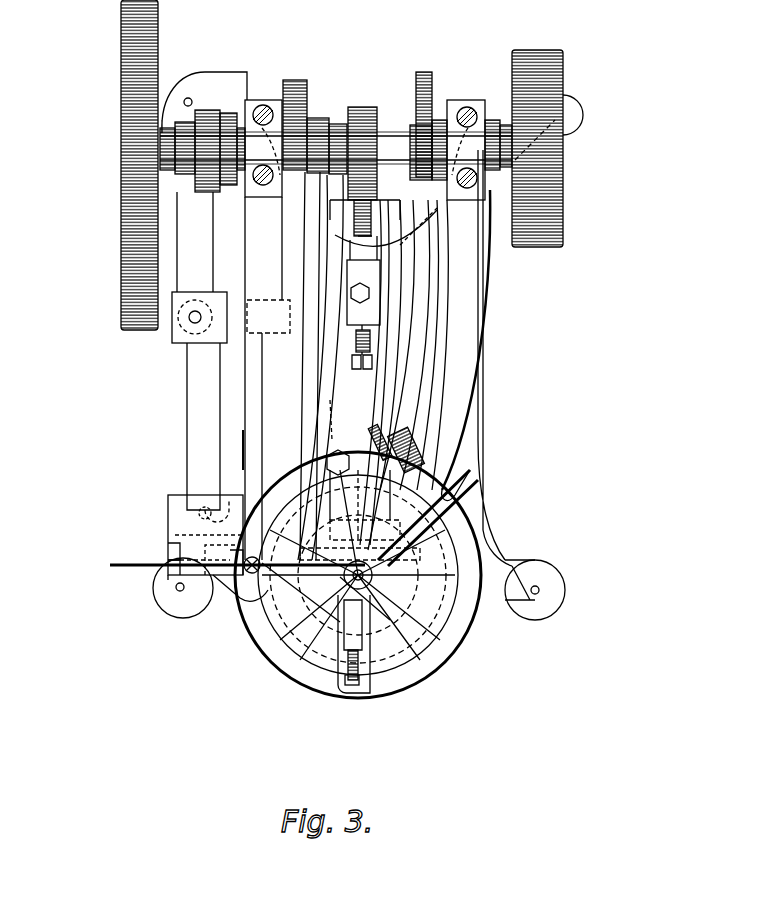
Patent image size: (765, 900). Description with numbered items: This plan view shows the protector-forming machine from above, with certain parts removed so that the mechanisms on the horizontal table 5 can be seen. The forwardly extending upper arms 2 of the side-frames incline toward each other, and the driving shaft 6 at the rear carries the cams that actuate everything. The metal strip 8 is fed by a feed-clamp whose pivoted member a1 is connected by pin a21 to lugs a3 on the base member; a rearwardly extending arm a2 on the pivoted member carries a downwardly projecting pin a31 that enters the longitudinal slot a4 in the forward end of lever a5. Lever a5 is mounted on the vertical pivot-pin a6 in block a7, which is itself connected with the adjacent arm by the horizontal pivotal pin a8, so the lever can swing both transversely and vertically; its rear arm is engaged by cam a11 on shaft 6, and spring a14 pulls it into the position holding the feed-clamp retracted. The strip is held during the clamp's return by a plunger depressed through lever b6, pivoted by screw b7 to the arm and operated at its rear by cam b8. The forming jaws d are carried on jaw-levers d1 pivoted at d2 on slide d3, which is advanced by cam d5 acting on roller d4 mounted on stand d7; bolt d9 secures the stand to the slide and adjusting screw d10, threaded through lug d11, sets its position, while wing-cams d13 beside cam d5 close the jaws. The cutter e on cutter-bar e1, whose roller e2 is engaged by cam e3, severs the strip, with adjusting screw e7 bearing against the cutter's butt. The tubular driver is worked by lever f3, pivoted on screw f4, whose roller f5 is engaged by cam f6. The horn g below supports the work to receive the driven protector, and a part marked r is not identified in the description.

The forwardly extending arm 2 is at (450, 405).
The horizontal table 5 is at (540, 104).
The driving shaft 6 is at (501, 124).
The strip 8 is at (126, 570).
The ratchet gear r is at (560, 222).
The pivoted member a1 is at (203, 580).
The rearwardly extending arm a2 is at (183, 527).
The lugs a3 is at (195, 590).
The longitudinal slot a4 is at (203, 508).
The lever a5 is at (182, 413).
The vertical pivot-pin a6 is at (193, 320).
The block a7 is at (172, 325).
The horizontal pivotal pin a8 is at (258, 298).
The cam a11 is at (205, 108).
The spring a14 is at (244, 204).
The pin a21 is at (180, 563).
The pin a31 is at (190, 505).
The lever b6 is at (200, 398).
The screw b7 is at (243, 450).
The cam b8 is at (230, 110).
The forming jaws d is at (313, 597).
The jaw-levers d1 is at (358, 372).
The pivot d2 is at (345, 430).
The slide d3 is at (385, 575).
The roller d4 is at (400, 246).
The cam d5 is at (366, 106).
The stand d7 is at (372, 232).
The bolt d9 is at (330, 310).
The adjusting screw d10 is at (365, 370).
The lug d11 is at (258, 360).
The wing-cams d13 is at (338, 122).
The cutter e is at (322, 618).
The cutter-bar e1 is at (318, 605).
The roller e2 is at (292, 84).
The cam e3 is at (312, 116).
The adjusting screw e7 is at (360, 660).
The lever f3 is at (420, 322).
The screw f4 is at (355, 450).
The roller f5 is at (426, 122).
The cam f6 is at (430, 70).
The horn g is at (380, 684).